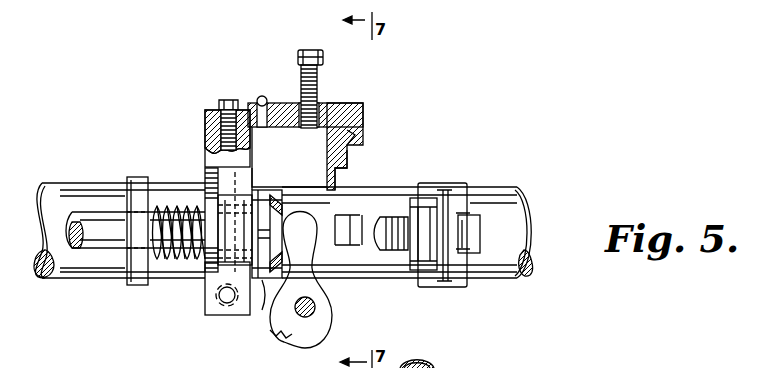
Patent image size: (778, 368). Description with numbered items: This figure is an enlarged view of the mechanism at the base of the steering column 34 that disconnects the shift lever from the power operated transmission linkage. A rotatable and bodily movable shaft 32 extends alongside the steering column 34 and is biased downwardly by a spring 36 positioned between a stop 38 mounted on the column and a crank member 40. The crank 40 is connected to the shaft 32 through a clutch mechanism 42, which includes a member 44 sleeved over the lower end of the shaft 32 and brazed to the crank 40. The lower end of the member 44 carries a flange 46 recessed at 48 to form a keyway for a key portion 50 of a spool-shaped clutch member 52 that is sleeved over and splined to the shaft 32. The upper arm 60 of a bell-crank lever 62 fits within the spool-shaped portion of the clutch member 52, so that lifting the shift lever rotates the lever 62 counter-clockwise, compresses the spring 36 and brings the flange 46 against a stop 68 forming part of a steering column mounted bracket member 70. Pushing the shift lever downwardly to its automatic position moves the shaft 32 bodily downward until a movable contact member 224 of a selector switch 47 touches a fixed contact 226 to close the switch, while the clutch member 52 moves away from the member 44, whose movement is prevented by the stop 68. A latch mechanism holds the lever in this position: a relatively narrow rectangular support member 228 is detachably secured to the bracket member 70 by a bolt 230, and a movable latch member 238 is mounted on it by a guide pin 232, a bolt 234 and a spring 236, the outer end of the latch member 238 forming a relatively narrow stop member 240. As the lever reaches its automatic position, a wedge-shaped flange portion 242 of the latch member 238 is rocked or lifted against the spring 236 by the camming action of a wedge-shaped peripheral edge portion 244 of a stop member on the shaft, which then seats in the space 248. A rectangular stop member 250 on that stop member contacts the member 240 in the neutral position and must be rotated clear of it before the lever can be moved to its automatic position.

The shaft 32 is at (86, 215).
The steering column 34 is at (500, 187).
The spring 36 is at (178, 263).
The stop 38 is at (131, 177).
The crank member 40 is at (206, 180).
The clutch mechanism 42 is at (272, 287).
The member 44 is at (213, 275).
The flange 46 is at (255, 195).
The selector switch 47 is at (395, 226).
The recess 48 is at (278, 200).
The key portion 50 is at (283, 205).
The clutch member 52 is at (274, 285).
The upper arm 60 is at (330, 298).
The bell-crank lever 62 is at (331, 318).
The stop 68 is at (252, 170).
The bracket member 70 is at (208, 138).
The movable contact member 224 is at (371, 222).
The fixed contact 226 is at (423, 184).
The support member 228 is at (207, 121).
The bolt 230 is at (219, 104).
The guide pin 232 is at (262, 96).
The bolt 234 is at (300, 85).
The spring 236 is at (298, 55).
The movable latch member 238 is at (297, 80).
The stop member 240 is at (363, 112).
The wedge-shaped flange portion 242 is at (338, 108).
The wedge-shaped peripheral edge portion 244 is at (330, 141).
The space 248 is at (363, 132).
The stop member 250 is at (347, 162).